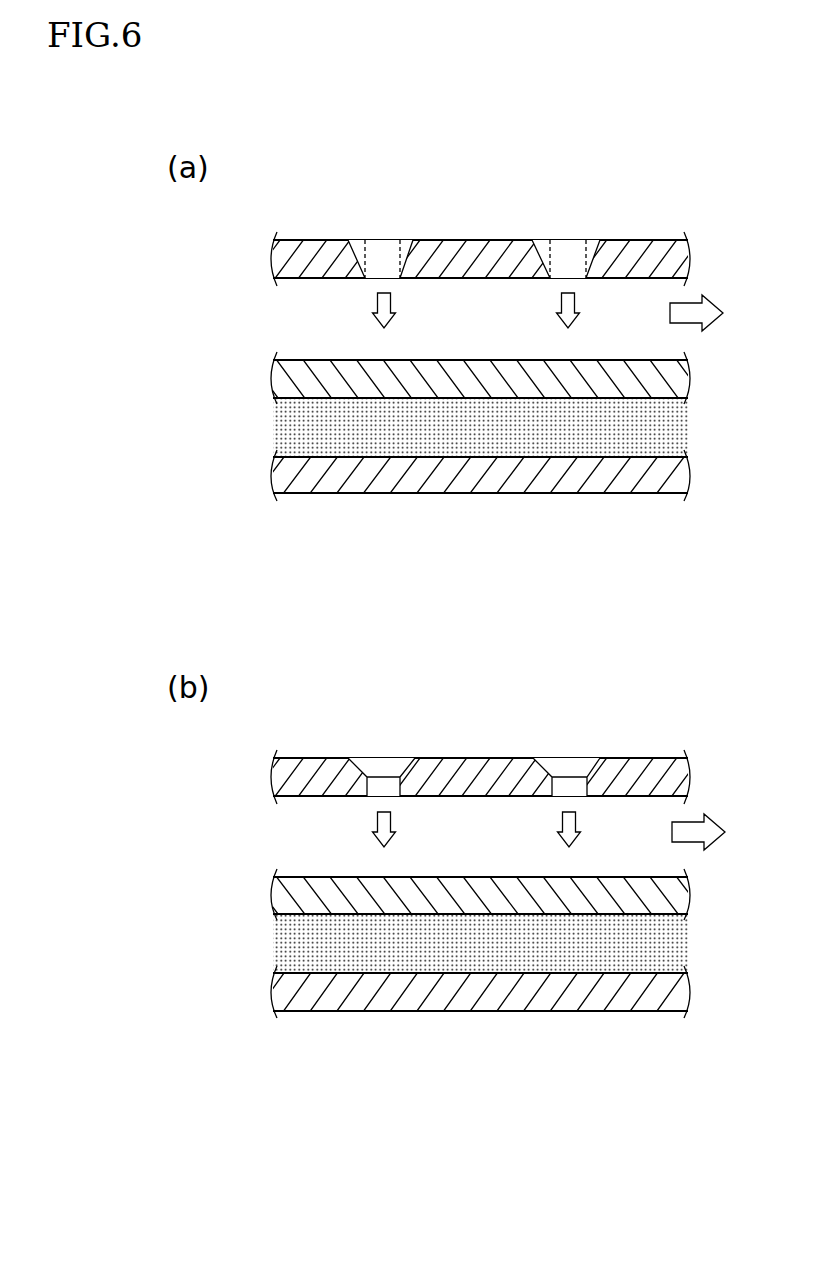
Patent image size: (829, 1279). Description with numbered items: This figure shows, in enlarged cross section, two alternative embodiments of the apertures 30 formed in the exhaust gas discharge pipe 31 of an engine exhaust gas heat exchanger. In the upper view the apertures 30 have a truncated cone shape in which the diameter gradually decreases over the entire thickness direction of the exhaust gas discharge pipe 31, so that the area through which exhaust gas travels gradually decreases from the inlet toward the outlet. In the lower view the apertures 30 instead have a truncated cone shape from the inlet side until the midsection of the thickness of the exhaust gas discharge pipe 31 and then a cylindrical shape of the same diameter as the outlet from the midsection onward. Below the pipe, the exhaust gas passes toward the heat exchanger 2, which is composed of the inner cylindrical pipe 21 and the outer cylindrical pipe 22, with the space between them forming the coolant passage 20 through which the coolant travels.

The heat exchanger 2 is at (451, 707).
The coolant passage 20 is at (300, 424).
The inner cylindrical pipe 21 is at (305, 358).
The outer cylindrical pipe 22 is at (318, 495).
The apertures 30 is at (358, 240).
The exhaust gas discharge pipe 31 is at (463, 250).